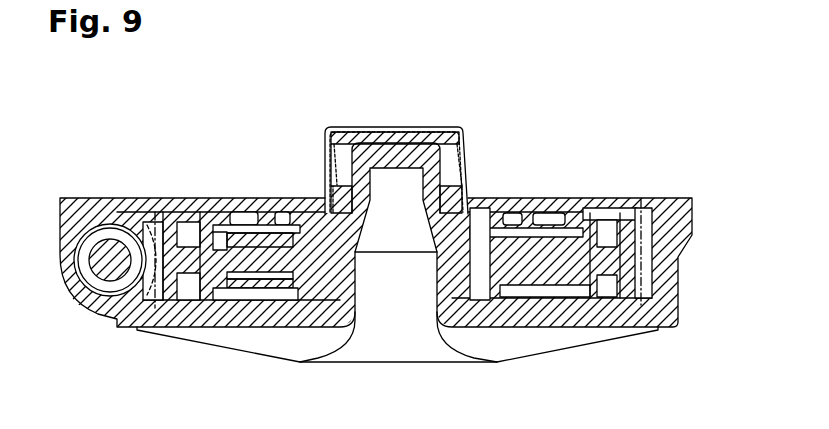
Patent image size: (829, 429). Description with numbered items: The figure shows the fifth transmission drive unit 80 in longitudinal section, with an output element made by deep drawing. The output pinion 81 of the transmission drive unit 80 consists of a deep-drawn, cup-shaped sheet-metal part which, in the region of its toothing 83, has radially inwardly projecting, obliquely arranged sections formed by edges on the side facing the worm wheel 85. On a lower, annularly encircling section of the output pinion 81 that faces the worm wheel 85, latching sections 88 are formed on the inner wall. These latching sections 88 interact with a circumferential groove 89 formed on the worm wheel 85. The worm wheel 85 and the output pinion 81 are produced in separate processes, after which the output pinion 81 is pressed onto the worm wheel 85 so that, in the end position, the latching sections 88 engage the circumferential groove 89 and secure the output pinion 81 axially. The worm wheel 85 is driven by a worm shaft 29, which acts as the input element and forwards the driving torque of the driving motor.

The fifth transmission drive unit 80 is at (637, 128).
The output pinion 81 is at (351, 128).
The toothing 83 is at (331, 150).
The circumferential groove 89 is at (330, 189).
The latching sections 88 is at (470, 198).
The worm wheel 85 is at (618, 258).
The worm shaft 29 is at (112, 268).